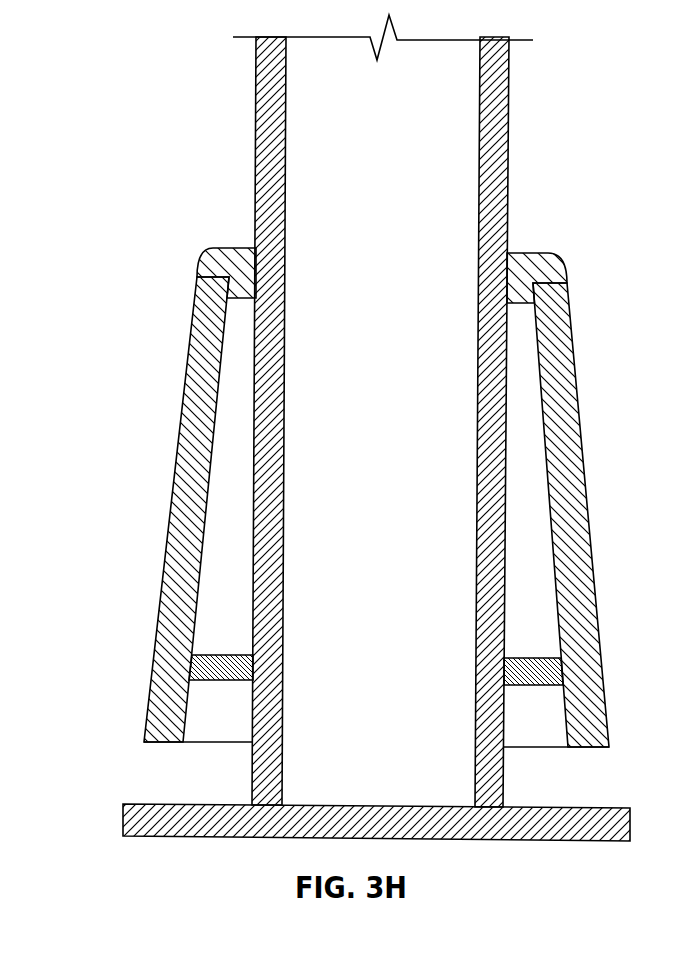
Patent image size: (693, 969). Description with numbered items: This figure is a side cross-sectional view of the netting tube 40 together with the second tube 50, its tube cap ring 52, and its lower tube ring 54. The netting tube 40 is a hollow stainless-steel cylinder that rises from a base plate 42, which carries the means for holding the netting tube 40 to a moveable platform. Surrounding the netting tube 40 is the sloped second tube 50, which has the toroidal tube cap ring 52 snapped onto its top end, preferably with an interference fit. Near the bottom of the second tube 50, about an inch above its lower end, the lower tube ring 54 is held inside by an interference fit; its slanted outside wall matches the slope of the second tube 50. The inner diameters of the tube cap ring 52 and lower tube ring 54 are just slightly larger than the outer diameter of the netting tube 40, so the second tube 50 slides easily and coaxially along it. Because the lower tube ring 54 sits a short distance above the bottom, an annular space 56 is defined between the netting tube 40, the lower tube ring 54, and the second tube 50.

The netting tube 40 is at (256, 127).
The base plate 42 is at (541, 840).
The second tube 50 is at (160, 402).
The tube cap ring 52 is at (521, 253).
The lower tube ring 54 is at (239, 654).
The annular space 56 is at (215, 752).